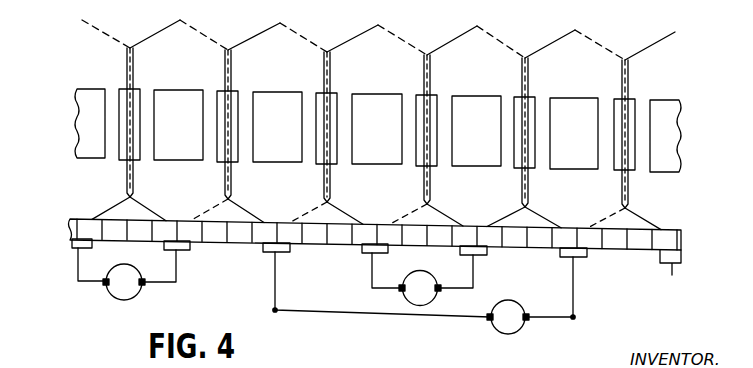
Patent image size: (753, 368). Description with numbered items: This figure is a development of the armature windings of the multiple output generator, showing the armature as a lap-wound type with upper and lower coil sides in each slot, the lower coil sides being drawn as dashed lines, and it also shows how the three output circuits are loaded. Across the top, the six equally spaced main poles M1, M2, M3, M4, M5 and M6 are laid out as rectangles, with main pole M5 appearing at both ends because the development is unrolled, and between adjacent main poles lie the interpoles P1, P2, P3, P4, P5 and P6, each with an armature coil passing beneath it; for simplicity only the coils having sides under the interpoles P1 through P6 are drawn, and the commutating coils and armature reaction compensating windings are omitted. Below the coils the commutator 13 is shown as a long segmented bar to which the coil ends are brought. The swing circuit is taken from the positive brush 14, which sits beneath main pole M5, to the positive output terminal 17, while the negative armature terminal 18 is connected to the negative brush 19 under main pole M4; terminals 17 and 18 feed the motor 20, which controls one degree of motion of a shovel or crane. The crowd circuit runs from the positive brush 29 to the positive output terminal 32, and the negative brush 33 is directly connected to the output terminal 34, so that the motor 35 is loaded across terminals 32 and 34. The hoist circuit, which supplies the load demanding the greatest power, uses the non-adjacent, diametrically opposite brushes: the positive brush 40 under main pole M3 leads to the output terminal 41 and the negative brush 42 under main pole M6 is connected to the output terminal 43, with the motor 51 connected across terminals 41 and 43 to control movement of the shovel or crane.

The main pole M1 is at (480, 101).
The main pole M2 is at (385, 103).
The main pole M3 is at (282, 99).
The main pole M4 is at (181, 95).
The main pole M5 is at (93, 89).
The main pole M6 is at (580, 105).
The interpole P1 is at (437, 166).
The interpole P2 is at (337, 164).
The interpole P3 is at (238, 162).
The interpole P4 is at (140, 160).
The interpole P5 is at (635, 170).
The interpole P6 is at (535, 168).
The commutator 13 is at (684, 248).
The positive brush 14 is at (72, 246).
The positive output terminal 17 is at (80, 264).
The negative armature terminal 18 is at (176, 271).
The negative brush 19 is at (191, 250).
The motor 20 is at (128, 293).
The positive brush 29 is at (488, 255).
The positive output terminal 32 is at (475, 274).
The negative brush 33 is at (390, 253).
The output terminal 34 is at (372, 272).
The motor 35 is at (404, 297).
The positive brush 40 is at (289, 252).
The output terminal 41 is at (275, 310).
The negative brush 42 is at (587, 257).
The output terminal 43 is at (576, 318).
The motor 51 is at (493, 328).